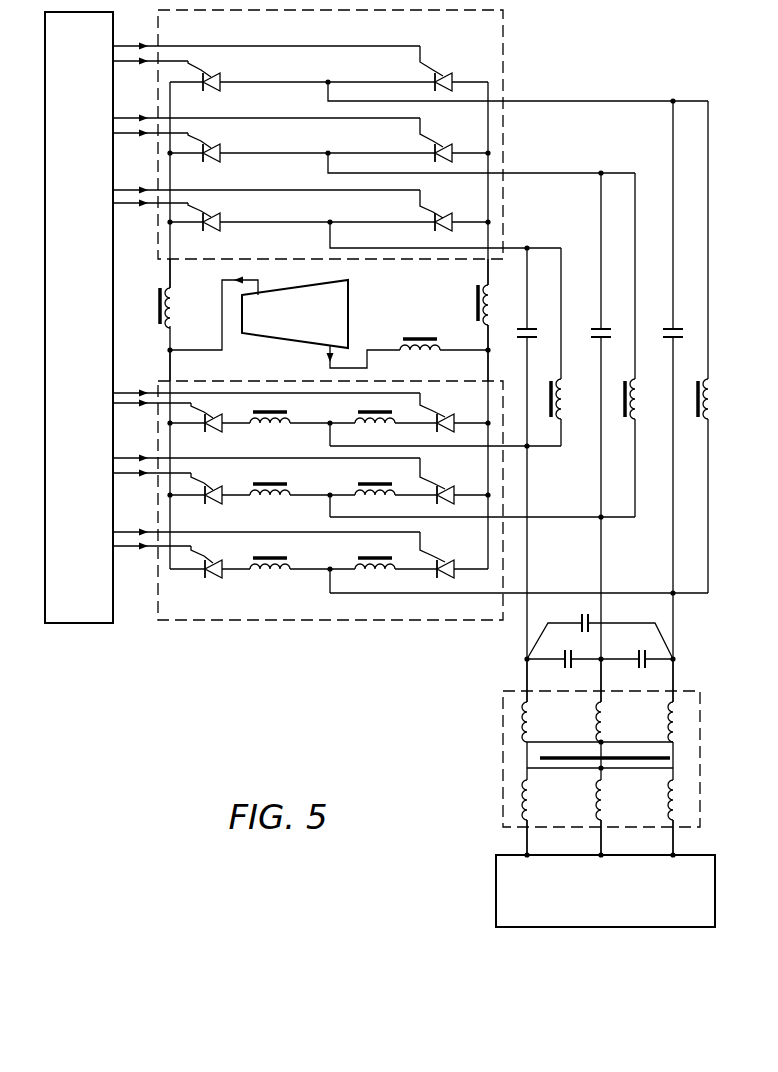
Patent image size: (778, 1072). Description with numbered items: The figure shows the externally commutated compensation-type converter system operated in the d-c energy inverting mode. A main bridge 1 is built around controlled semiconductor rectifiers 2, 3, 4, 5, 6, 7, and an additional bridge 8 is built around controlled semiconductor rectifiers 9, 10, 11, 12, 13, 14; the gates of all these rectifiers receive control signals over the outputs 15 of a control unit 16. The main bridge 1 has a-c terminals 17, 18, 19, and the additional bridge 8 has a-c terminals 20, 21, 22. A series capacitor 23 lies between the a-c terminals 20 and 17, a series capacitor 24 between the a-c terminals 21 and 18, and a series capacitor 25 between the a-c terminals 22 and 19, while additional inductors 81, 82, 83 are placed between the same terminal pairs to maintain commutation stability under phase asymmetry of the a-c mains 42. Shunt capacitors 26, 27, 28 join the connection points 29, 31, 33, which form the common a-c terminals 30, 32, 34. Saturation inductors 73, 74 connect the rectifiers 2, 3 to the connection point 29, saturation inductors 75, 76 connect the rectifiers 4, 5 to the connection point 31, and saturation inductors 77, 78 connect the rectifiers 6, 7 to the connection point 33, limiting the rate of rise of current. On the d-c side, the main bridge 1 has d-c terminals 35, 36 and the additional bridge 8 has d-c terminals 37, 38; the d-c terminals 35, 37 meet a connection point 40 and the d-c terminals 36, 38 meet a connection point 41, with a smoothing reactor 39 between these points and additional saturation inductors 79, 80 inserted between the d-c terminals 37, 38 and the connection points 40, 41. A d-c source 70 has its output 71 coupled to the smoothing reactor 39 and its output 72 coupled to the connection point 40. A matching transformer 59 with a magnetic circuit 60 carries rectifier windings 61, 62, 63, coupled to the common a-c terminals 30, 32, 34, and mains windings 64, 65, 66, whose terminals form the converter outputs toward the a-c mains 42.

The main bridge 1 is at (339, 628).
The controlled semiconductor rectifier 2 is at (450, 417).
The controlled semiconductor rectifier 3 is at (224, 429).
The controlled semiconductor rectifier 4 is at (445, 488).
The controlled semiconductor rectifier 5 is at (224, 501).
The controlled semiconductor rectifier 6 is at (446, 561).
The controlled semiconductor rectifier 7 is at (226, 566).
The additional bridge 8 is at (512, 47).
The controlled semiconductor rectifier 9 is at (221, 219).
The controlled semiconductor rectifier 10 is at (447, 216).
The controlled semiconductor rectifier 11 is at (222, 150).
The controlled semiconductor rectifier 12 is at (447, 146).
The controlled semiconductor rectifier 13 is at (222, 80).
The controlled semiconductor rectifier 14 is at (447, 74).
The outputs of the control unit 15 is at (127, 45).
The control unit 16 is at (79, 317).
The a-c terminal 17 is at (512, 444).
The a-c terminal 18 is at (580, 517).
The a-c terminal 19 is at (647, 592).
The a-c terminal 20 is at (515, 248).
The a-c terminal 21 is at (540, 173).
The a-c terminal 22 is at (546, 101).
The series capacitor 23 is at (530, 327).
The series capacitor 24 is at (603, 328).
The series capacitor 25 is at (675, 328).
The shunt capacitor 26 is at (555, 649).
The shunt capacitor 27 is at (582, 622).
The shunt capacitor 28 is at (645, 623).
The connection point 29 is at (330, 423).
The common a-c terminal 30 is at (527, 678).
The connection point 31 is at (330, 495).
The common a-c terminal 32 is at (603, 678).
The connection point 33 is at (332, 569).
The common a-c terminal 34 is at (675, 678).
The d-c terminal 35 is at (172, 368).
The d-c terminal 36 is at (490, 356).
The d-c terminal 37 is at (176, 269).
The d-c terminal 38 is at (488, 268).
The smoothing reactor 39 is at (398, 345).
The connection point 40 is at (169, 349).
The connection point 41 is at (493, 342).
The a-c mains 42 is at (605, 891).
The matching transformer 59 is at (498, 758).
The magnetic circuit 60 is at (652, 764).
The rectifier winding 61 is at (533, 722).
The rectifier winding 62 is at (606, 722).
The rectifier winding 63 is at (678, 722).
The mains winding 64 is at (532, 797).
The mains winding 65 is at (606, 798).
The mains winding 66 is at (678, 798).
The d-c source 70 is at (295, 314).
The output of the d-c source 71 is at (325, 358).
The output of the d-c source 72 is at (222, 305).
The saturation inductor 73 is at (386, 426).
The saturation inductor 74 is at (266, 427).
The saturation inductor 75 is at (388, 496).
The saturation inductor 76 is at (286, 499).
The saturation inductor 77 is at (390, 573).
The saturation inductor 78 is at (286, 573).
The additional saturation inductor 79 is at (177, 320).
The additional saturation inductor 80 is at (491, 290).
The additional inductor 81 is at (565, 398).
The additional inductor 82 is at (639, 398).
The additional inductor 83 is at (712, 399).